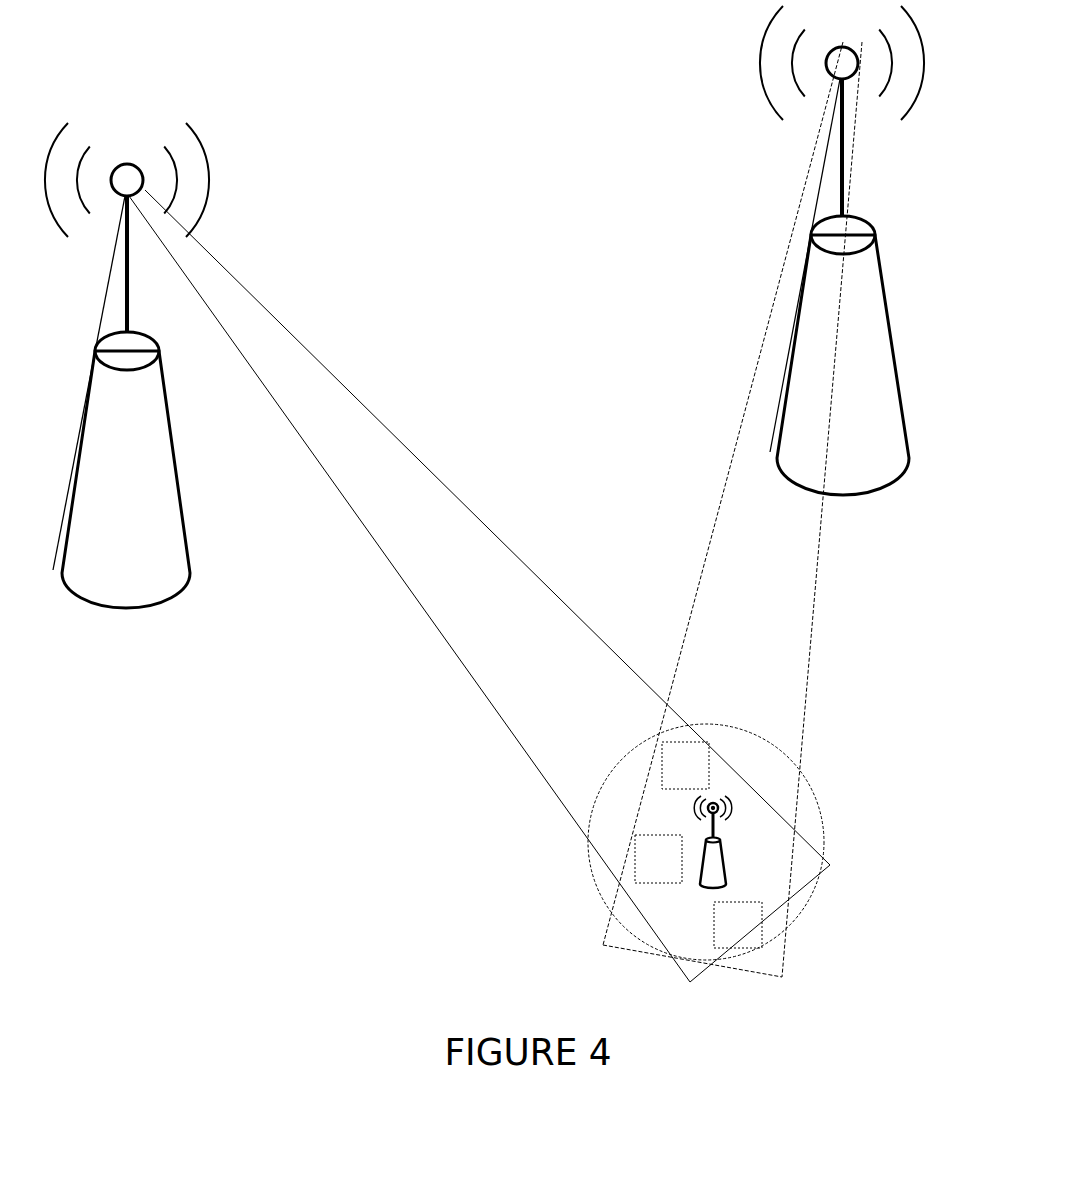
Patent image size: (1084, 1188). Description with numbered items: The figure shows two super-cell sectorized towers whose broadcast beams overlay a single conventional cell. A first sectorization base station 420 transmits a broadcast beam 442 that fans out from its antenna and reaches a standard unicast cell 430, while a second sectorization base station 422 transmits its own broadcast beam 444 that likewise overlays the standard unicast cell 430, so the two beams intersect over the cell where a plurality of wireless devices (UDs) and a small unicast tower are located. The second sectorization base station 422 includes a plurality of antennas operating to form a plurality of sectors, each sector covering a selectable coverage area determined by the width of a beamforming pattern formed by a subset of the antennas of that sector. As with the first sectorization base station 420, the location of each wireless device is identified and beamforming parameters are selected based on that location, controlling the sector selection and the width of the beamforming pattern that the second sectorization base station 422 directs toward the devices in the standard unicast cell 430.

The first sectorization base station 420 is at (127, 426).
The second sectorization base station 422 is at (859, 317).
The standard unicast cell 430 is at (604, 888).
The broadcast beam 442 is at (479, 586).
The broadcast beam 444 is at (716, 509).